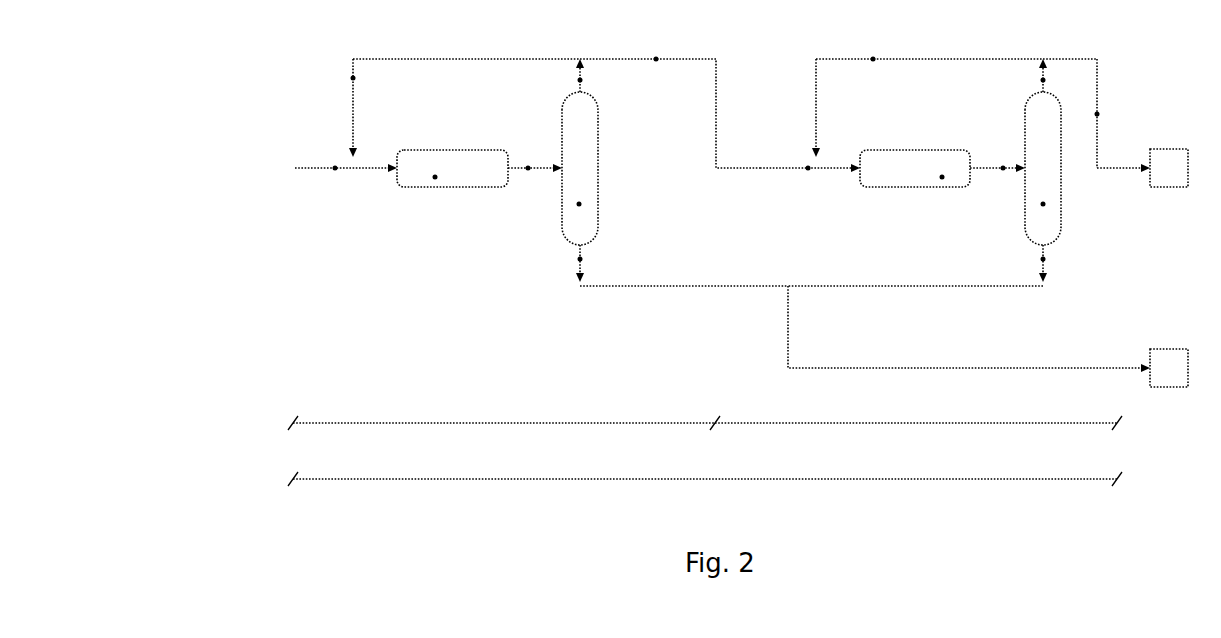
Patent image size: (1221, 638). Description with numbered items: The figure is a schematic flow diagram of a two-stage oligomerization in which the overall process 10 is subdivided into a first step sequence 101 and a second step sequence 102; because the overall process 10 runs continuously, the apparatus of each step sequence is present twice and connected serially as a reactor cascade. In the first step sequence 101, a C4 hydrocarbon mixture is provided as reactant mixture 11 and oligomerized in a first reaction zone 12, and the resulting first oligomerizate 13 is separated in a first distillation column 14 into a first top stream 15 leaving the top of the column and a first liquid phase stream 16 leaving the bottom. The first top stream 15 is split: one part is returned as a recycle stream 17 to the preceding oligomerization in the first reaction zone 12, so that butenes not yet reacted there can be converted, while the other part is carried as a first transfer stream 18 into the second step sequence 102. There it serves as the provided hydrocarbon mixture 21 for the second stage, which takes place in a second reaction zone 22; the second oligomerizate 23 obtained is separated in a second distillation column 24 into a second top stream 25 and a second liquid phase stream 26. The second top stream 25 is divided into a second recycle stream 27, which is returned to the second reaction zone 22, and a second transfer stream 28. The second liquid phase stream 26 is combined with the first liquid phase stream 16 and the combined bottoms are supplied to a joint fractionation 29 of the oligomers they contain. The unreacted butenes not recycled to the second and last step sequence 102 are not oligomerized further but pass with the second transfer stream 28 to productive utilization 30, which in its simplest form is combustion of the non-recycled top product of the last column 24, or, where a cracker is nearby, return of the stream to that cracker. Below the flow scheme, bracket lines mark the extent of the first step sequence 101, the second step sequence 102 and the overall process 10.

The overall process 10 is at (705, 471).
The first step sequence 101 is at (504, 414).
The second step sequence 102 is at (918, 414).
The reactant mixture 11 is at (335, 168).
The first reaction zone 12 is at (435, 177).
The first oligomerizate 13 is at (520, 168).
The first distillation column 14 is at (579, 204).
The first top stream 15 is at (580, 80).
The first liquid phase stream 16 is at (580, 259).
The recycle stream 17 is at (353, 78).
The first transfer stream 18 is at (655, 59).
The provided hydrocarbon mixture 21 is at (808, 168).
The second reaction zone 22 is at (942, 177).
The second oligomerizate 23 is at (993, 168).
The second distillation column 24 is at (1043, 204).
The second top stream 25 is at (1043, 80).
The second liquid phase stream 26 is at (1043, 259).
The second recycle stream 27 is at (873, 59).
The second transfer stream 28 is at (1097, 114).
The joint fractionation 29 is at (988, 336).
The productive utilization 30 is at (1142, 168).